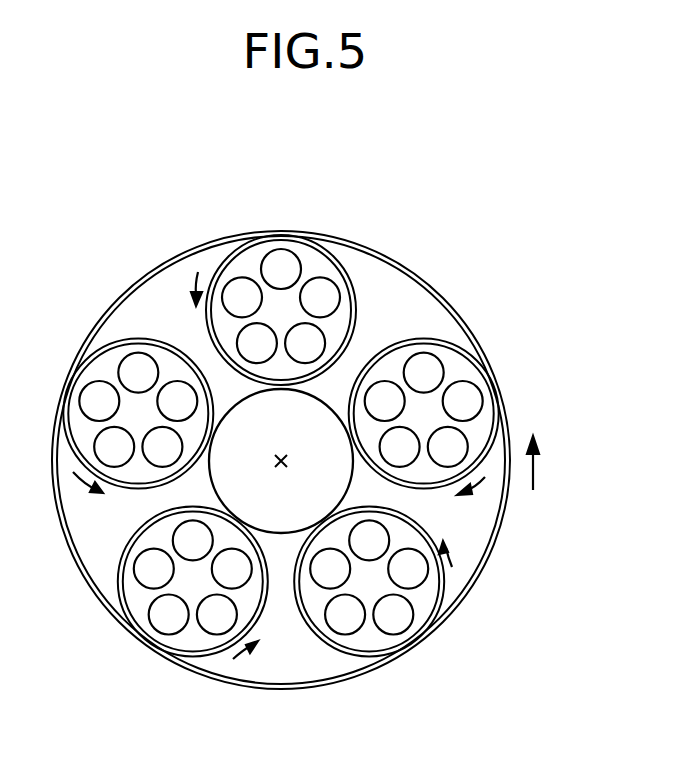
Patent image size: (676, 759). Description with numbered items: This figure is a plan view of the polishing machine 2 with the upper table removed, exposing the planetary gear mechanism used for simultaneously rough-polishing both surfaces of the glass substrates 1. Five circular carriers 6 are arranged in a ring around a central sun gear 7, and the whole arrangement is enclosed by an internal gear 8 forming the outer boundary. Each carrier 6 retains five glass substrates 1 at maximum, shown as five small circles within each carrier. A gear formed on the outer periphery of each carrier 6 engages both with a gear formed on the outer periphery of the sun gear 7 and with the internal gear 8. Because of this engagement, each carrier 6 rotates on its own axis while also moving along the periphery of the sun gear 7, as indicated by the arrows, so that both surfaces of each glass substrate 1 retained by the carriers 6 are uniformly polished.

The glass substrate 1 is at (287, 258).
The polishing machine 2 is at (295, 430).
The carrier 6 is at (281, 278).
The sun gear 7 is at (297, 442).
The internal gear 8 is at (457, 313).